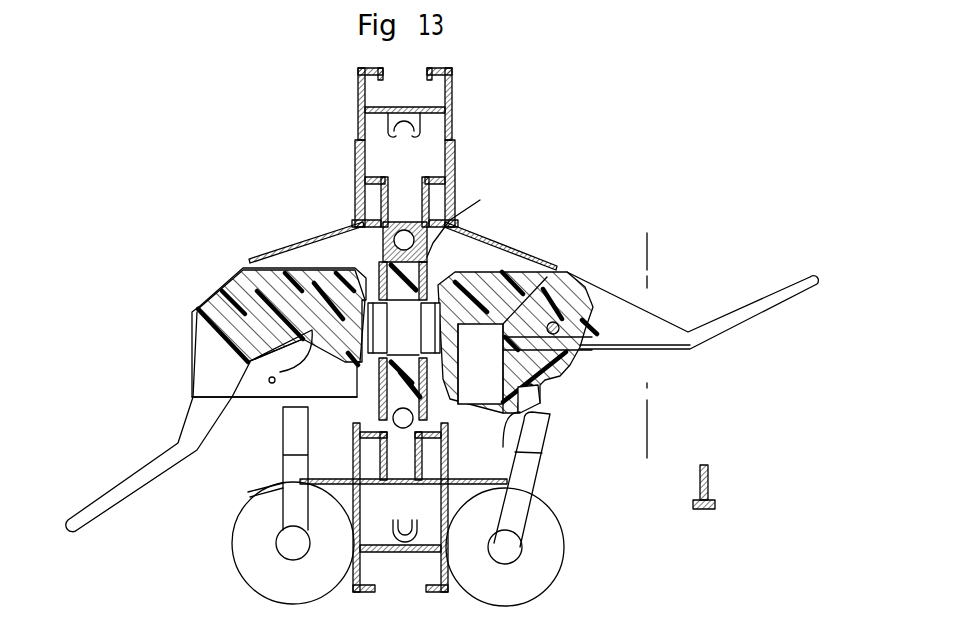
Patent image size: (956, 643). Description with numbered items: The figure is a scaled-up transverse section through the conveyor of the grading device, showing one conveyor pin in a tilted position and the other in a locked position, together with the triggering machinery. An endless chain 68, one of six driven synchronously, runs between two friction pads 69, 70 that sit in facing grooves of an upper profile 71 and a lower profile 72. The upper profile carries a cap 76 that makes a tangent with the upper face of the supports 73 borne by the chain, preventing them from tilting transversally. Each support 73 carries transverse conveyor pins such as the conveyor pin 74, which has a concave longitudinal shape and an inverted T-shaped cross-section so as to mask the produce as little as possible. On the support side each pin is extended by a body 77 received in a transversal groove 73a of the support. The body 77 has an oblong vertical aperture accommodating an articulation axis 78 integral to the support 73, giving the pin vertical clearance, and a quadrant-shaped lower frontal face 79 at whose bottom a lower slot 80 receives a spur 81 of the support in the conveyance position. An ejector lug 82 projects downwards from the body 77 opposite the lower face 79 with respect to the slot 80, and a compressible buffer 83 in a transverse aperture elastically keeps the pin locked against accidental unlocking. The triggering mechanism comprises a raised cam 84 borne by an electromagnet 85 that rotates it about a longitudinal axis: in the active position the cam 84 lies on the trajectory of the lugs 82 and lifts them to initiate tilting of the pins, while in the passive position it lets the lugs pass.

The upper profile 71 is at (452, 150).
The cap 76 is at (465, 227).
The friction pad 69 is at (450, 275).
The endless chain 68 is at (447, 282).
The support 73 is at (300, 265).
The body 77 is at (240, 278).
The articulation axis 78 is at (200, 316).
The lower slot 80 is at (280, 372).
The spur 81 is at (268, 382).
The transverse conveyor pin 74 is at (125, 487).
The transversal groove 73a is at (283, 390).
The buffer 83 is at (600, 312).
The lower frontal face 79 is at (560, 380).
The friction pad 70 is at (552, 420).
The ejector lug 82 is at (543, 448).
The raised cam 84 is at (523, 470).
The electromagnet 85 is at (260, 582).
The lower profile 72 is at (400, 555).